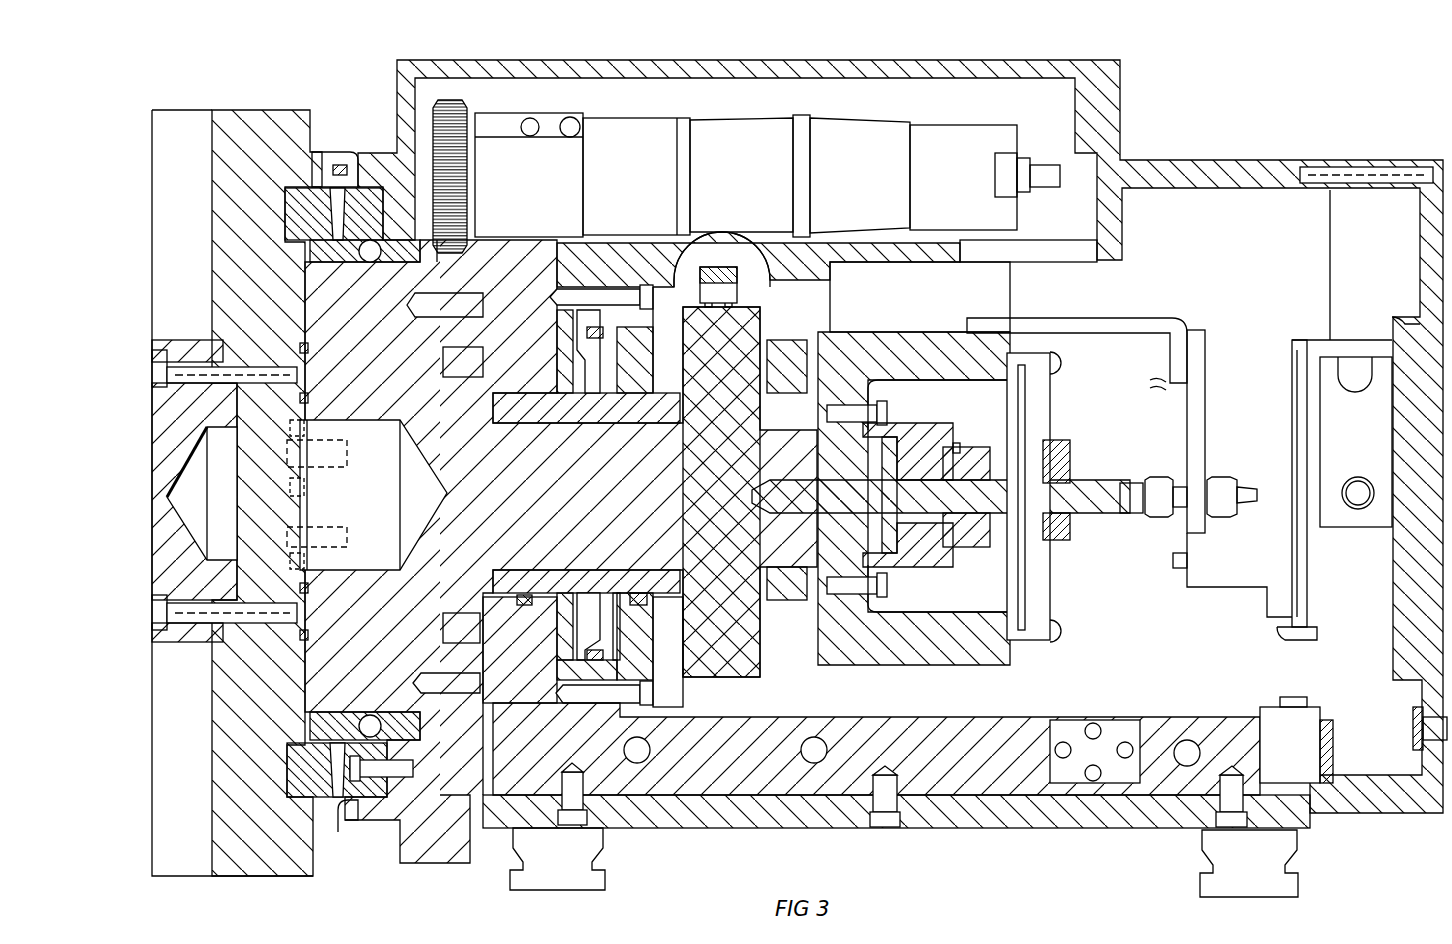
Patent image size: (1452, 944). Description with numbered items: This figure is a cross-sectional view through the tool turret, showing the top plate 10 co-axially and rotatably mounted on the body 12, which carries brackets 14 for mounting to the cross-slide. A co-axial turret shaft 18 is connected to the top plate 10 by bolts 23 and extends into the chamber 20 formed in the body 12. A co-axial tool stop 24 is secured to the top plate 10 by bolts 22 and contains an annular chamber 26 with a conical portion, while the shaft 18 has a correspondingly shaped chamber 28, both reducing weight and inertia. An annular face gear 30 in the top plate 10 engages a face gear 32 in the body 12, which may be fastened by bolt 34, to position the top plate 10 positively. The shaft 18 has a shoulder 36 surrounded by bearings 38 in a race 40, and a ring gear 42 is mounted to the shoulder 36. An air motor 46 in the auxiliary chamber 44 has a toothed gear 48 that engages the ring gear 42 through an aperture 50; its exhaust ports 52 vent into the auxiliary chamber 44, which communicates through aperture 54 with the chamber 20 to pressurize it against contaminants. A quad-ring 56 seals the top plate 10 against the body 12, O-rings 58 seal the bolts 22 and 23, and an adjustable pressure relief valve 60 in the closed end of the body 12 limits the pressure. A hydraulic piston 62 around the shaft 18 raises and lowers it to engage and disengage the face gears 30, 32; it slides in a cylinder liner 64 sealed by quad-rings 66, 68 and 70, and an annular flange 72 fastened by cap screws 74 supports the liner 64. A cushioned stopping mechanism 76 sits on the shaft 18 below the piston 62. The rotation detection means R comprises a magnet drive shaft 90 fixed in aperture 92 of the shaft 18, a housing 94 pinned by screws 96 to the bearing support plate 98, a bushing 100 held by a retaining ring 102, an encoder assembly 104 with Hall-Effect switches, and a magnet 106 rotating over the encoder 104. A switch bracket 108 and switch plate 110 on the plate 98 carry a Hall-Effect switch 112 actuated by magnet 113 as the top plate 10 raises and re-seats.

The top plate 10 is at (265, 108).
The body 12 is at (1405, 441).
The brackets 14 is at (605, 880).
The turret shaft 18 is at (603, 506).
The chamber 20 is at (1148, 651).
The bolts 22 is at (196, 360).
The bolts 23 is at (316, 460).
The tool stop 24 is at (150, 505).
The annular chamber 26 is at (216, 575).
The chamber 28 is at (380, 565).
The face gear 30 is at (317, 492).
The face gear 32 is at (405, 808).
The bolt 34 is at (413, 768).
The annular flange or shoulder 36 is at (386, 653).
The bearings 38 is at (370, 715).
The race 40 is at (338, 712).
The ring gear 42 is at (470, 262).
The auxiliary chamber 44 is at (903, 60).
The air motor 46 is at (634, 189).
The toothed gear 48 is at (456, 115).
The aperture 50 is at (447, 242).
The exhaust ports 52 is at (530, 137).
The aperture 54 is at (962, 262).
The O-ring or quad-ring 56 is at (342, 165).
The O-rings 58 is at (310, 348).
The adjustable pressure relief valve 60 is at (1413, 715).
The piston 62 is at (602, 410).
The cylinder liner 64 is at (612, 318).
The quad-ring 66 is at (525, 605).
The quad-ring 68 is at (603, 655).
The quad-ring 70 is at (647, 602).
The annular flange 72 is at (652, 660).
The cap screws 74 is at (648, 694).
The cushioned stopping mechanism 76 is at (762, 299).
The magnet drive shaft 90 is at (798, 490).
The aperture 92 is at (870, 483).
The housing 94 is at (948, 447).
The screws 96 is at (870, 410).
The bearing support plate 98 is at (878, 340).
The bushing 100 is at (898, 446).
The retaining ring 102 is at (960, 449).
The encoder assembly 104 is at (1043, 406).
The magnet 106 is at (1071, 450).
The switch bracket 108 is at (1176, 325).
The switch plate 110 is at (1203, 420).
The Hall-Effect switch 112 is at (1148, 478).
The magnet 113 is at (1132, 483).
The rotation detection means R is at (1064, 550).